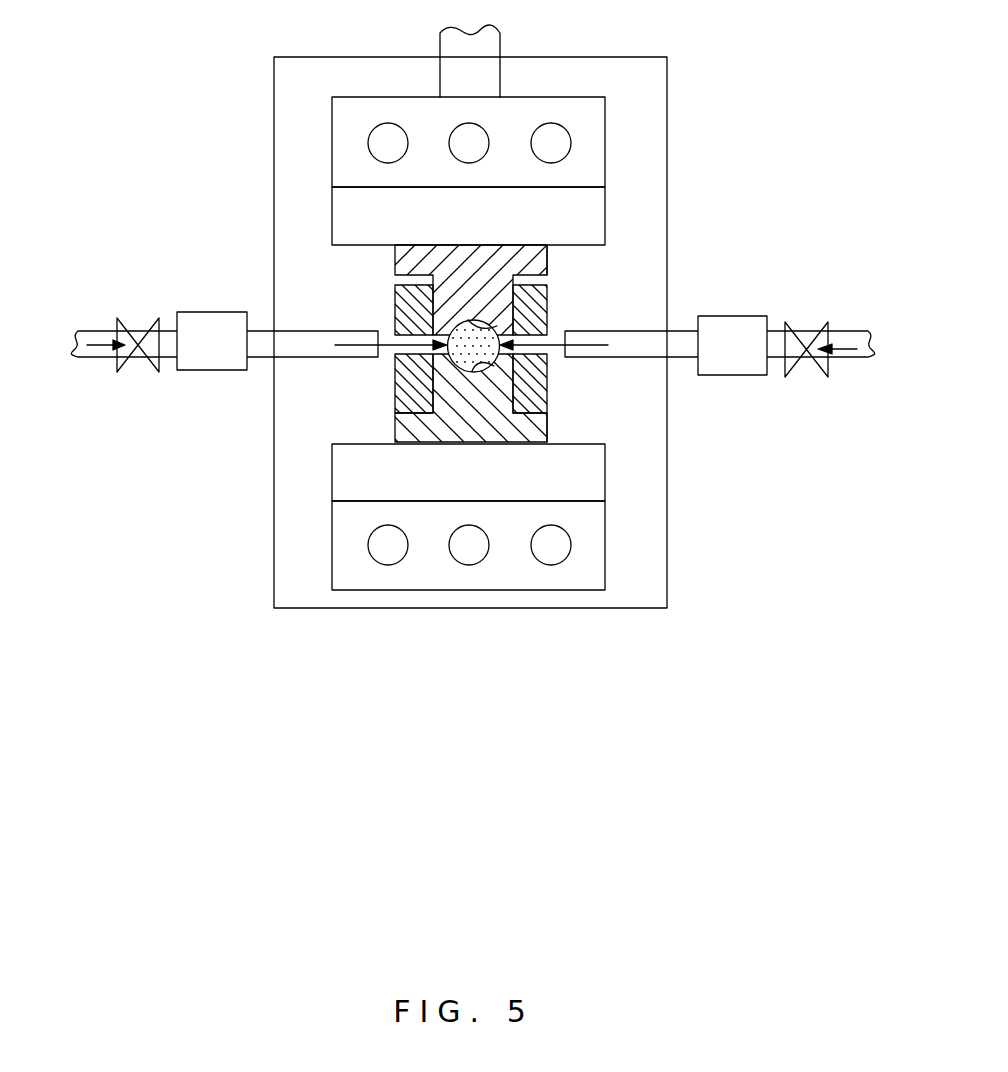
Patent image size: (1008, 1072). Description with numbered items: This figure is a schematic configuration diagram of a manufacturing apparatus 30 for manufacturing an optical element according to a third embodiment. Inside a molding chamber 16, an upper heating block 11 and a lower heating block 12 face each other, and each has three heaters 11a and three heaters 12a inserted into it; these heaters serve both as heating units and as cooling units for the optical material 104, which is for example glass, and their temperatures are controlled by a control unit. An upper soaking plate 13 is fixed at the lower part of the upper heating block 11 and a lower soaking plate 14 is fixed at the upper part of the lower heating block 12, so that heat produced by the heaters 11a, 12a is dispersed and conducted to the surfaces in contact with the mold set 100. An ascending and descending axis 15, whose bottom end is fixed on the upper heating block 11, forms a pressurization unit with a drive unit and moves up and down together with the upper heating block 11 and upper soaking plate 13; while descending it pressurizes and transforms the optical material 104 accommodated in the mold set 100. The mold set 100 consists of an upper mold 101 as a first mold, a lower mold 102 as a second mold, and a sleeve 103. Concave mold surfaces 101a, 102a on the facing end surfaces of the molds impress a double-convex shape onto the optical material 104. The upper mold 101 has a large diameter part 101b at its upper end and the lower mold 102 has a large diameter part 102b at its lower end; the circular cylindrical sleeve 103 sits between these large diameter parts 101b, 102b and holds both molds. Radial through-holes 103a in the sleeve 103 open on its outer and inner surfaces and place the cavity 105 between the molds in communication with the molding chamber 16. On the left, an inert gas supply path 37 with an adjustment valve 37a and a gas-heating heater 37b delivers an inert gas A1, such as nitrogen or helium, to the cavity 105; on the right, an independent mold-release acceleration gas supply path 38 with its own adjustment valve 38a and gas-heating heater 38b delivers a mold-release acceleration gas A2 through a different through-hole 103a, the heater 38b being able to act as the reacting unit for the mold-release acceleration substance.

The manufacturing apparatus 30 is at (158, 80).
The molding chamber 16 is at (273, 180).
The ascending and descending axis 15 is at (488, 62).
The upper heating block 11 is at (605, 135).
The heaters 11a is at (383, 128).
The upper soaking plate 13 is at (605, 217).
The lower soaking plate 14 is at (605, 473).
The lower heating block 12 is at (605, 545).
The heaters 12a is at (384, 555).
The mold set 100 is at (641, 414).
The upper mold 101 is at (393, 258).
The concave mold surface 101a is at (497, 329).
The large diameter part 101b is at (548, 255).
The lower mold 102 is at (394, 418).
The concave mold surface 102a is at (497, 364).
The large diameter part 102b is at (548, 420).
The sleeve 103 is at (549, 302).
The through-holes 103a is at (412, 352).
The optical material 104 is at (456, 336).
The cavity 105 is at (450, 342).
The inert gas supply path 37 is at (107, 330).
The adjustment valve 37a is at (142, 320).
The gas-heating heater 37b is at (212, 323).
The inert gas A1 is at (108, 348).
The mold-release acceleration gas supply path 38 is at (848, 337).
The adjustment valve 38a is at (803, 325).
The gas-heating heater 38b is at (732, 325).
The mold-release acceleration gas A2 is at (587, 347).